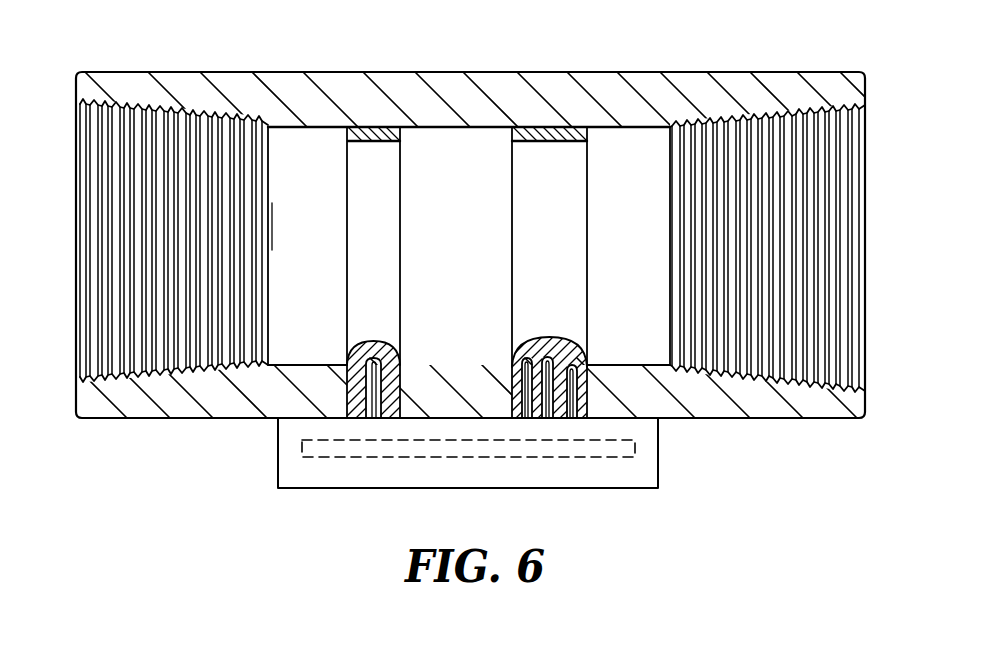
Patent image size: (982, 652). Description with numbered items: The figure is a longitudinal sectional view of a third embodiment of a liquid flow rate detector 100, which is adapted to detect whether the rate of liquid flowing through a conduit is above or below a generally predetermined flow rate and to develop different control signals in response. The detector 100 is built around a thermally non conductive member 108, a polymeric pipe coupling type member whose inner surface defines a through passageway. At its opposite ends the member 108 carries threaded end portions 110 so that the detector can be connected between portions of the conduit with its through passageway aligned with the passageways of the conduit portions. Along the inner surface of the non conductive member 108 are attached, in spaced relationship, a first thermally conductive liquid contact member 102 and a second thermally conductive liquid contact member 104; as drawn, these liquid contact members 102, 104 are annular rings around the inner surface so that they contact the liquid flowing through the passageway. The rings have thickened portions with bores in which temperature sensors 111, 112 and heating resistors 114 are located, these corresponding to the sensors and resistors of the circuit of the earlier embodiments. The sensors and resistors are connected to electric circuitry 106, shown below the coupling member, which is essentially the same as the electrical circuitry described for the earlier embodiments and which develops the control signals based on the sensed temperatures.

The liquid flow rate detector 100 is at (644, 58).
The first thermally conductive liquid contact member 102 is at (353, 222).
The second thermally conductive liquid contact member 104 is at (522, 205).
The electric circuitry 106 is at (395, 457).
The thermally non conductive member 108 is at (464, 72).
The threaded end portions 110 is at (700, 205).
The temperature sensor 111 is at (350, 346).
The temperature sensor 112 is at (556, 346).
The heating resistors 114 is at (512, 363).